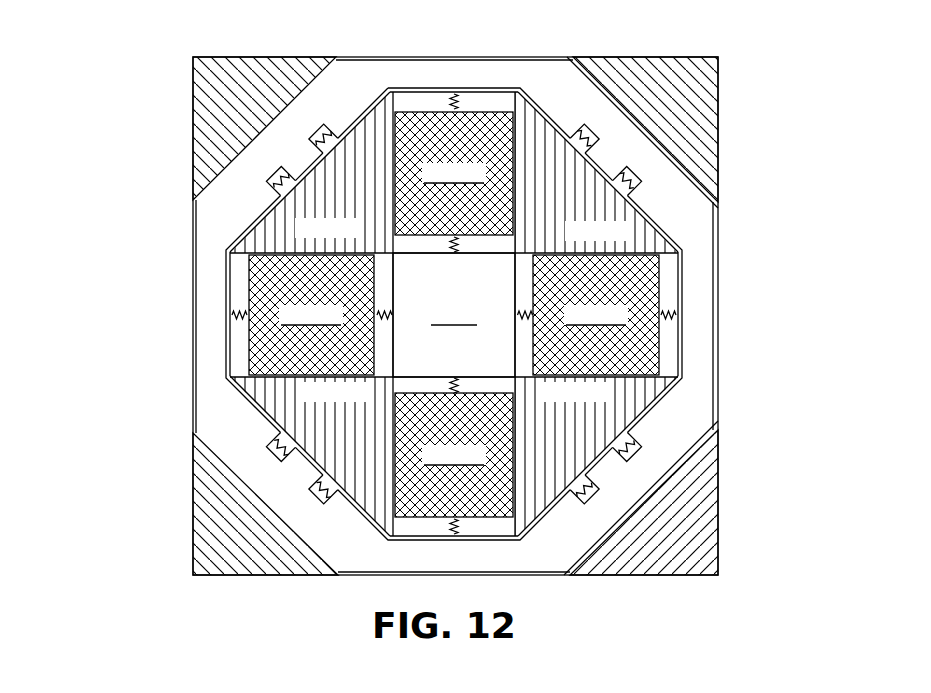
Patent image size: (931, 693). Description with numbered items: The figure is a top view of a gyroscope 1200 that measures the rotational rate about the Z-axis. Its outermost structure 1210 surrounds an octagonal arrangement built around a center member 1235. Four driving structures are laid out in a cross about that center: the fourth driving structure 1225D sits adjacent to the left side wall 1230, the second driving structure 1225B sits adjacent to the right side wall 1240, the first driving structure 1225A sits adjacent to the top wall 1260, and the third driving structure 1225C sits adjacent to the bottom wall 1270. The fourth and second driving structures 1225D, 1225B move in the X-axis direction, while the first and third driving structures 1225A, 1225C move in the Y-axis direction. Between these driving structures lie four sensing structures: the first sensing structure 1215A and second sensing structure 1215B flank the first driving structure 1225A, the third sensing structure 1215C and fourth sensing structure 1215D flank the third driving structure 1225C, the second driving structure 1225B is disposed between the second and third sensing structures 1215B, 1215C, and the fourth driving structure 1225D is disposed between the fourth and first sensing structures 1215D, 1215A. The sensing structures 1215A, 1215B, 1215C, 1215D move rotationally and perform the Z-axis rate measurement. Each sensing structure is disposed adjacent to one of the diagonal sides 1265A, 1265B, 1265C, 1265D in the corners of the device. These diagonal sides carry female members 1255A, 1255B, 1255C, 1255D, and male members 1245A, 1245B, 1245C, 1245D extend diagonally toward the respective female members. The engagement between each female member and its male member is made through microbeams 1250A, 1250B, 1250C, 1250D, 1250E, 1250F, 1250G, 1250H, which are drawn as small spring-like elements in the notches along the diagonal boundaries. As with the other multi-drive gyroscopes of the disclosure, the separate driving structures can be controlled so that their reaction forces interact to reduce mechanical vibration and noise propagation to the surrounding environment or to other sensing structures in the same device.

The gyroscope 1200 is at (70, 58).
The outermost structure 1210 is at (425, 82).
The first sensing structure 1215A is at (260, 237).
The second sensing structure 1215B is at (532, 130).
The third sensing structure 1215C is at (643, 392).
The fourth sensing structure 1215D is at (260, 393).
The first driving structure 1225A is at (454, 173).
The second driving structure 1225B is at (596, 315).
The third driving structure 1225C is at (454, 455).
The fourth driving structure 1225D is at (311, 315).
The left side wall 1230 is at (219, 314).
The center member 1235 is at (454, 315).
The right side wall 1240 is at (703, 303).
The male member 1245A is at (300, 168).
The male member 1245B is at (607, 162).
The male member 1245C is at (615, 468).
The male member 1245D is at (297, 467).
The microbeam 1250A is at (283, 183).
The microbeam 1250B is at (313, 137).
The microbeam 1250C is at (620, 163).
The microbeam 1250D is at (623, 173).
The microbeam 1250E is at (623, 440).
The microbeam 1250F is at (595, 490).
The microbeam 1250G is at (320, 498).
The microbeam 1250H is at (294, 448).
The female member 1255A is at (278, 171).
The female member 1255B is at (593, 147).
The female member 1255C is at (625, 468).
The female member 1255D is at (282, 466).
The top wall 1260 is at (443, 75).
The diagonal side 1265A is at (308, 103).
The diagonal side 1265B is at (677, 185).
The diagonal side 1265C is at (583, 538).
The diagonal side 1265D is at (333, 540).
The bottom wall 1270 is at (498, 552).